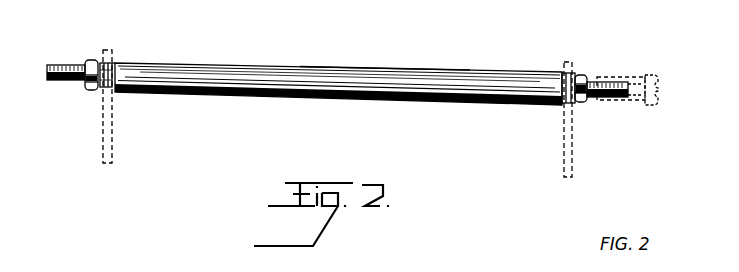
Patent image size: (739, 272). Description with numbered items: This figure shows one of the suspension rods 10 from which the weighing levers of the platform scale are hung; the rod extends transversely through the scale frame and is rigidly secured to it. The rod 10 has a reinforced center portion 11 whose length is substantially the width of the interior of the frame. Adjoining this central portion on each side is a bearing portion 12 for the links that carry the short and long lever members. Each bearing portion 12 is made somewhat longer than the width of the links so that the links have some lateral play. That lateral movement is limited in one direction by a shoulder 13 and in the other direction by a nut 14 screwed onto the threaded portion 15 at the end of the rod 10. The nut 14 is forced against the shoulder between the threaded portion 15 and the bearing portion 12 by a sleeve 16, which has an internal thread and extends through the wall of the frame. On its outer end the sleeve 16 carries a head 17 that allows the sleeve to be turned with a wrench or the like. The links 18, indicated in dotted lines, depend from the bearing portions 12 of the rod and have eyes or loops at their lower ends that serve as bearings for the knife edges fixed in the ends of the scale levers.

The rod 10 is at (500, 72).
The reinforced center portion 11 is at (384, 78).
The bearing portion 12 is at (110, 55).
The shoulder 13 is at (117, 54).
The nut 14 is at (91, 60).
The threaded portion 15 is at (62, 65).
The sleeve 16 is at (633, 78).
The head 17 is at (658, 94).
The link 18 is at (110, 145).